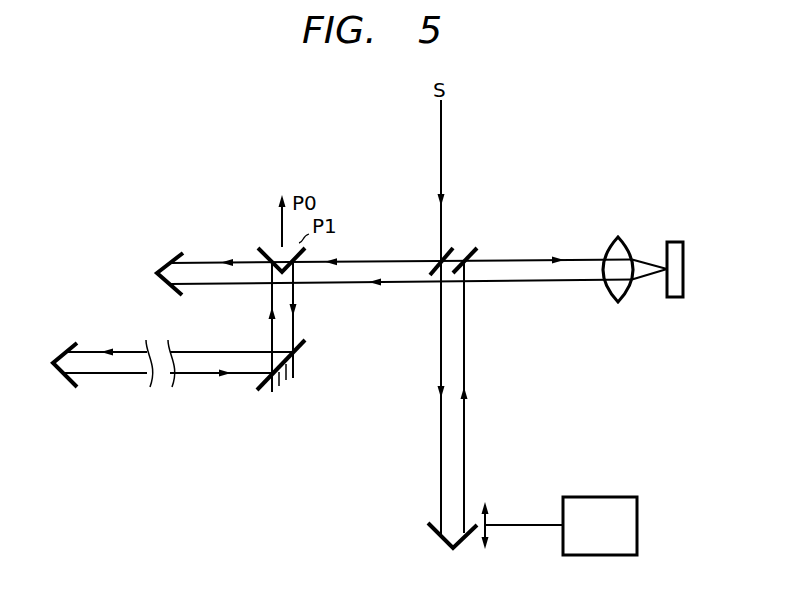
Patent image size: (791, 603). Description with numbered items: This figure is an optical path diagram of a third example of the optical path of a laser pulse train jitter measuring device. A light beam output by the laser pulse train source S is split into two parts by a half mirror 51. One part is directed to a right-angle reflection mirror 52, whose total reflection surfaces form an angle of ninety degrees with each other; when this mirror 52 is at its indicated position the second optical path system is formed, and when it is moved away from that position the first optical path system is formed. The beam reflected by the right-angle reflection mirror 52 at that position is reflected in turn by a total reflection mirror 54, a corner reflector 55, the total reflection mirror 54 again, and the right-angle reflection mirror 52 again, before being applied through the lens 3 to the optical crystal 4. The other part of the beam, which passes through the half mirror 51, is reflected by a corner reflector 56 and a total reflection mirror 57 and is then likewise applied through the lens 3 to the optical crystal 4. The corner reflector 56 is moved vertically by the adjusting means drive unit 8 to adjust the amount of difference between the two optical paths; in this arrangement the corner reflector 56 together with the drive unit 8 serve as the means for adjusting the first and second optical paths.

The lens 3 is at (629, 240).
The optical crystal 4 is at (676, 242).
The adjusting means drive unit 8 is at (623, 497).
The half mirror 51 is at (450, 250).
The right-angle reflection mirror 52 is at (263, 247).
The total reflection mirror 54 is at (287, 383).
The corner reflector 55 is at (175, 252).
The corner reflector 56 is at (430, 528).
The total reflection mirror 57 is at (474, 250).